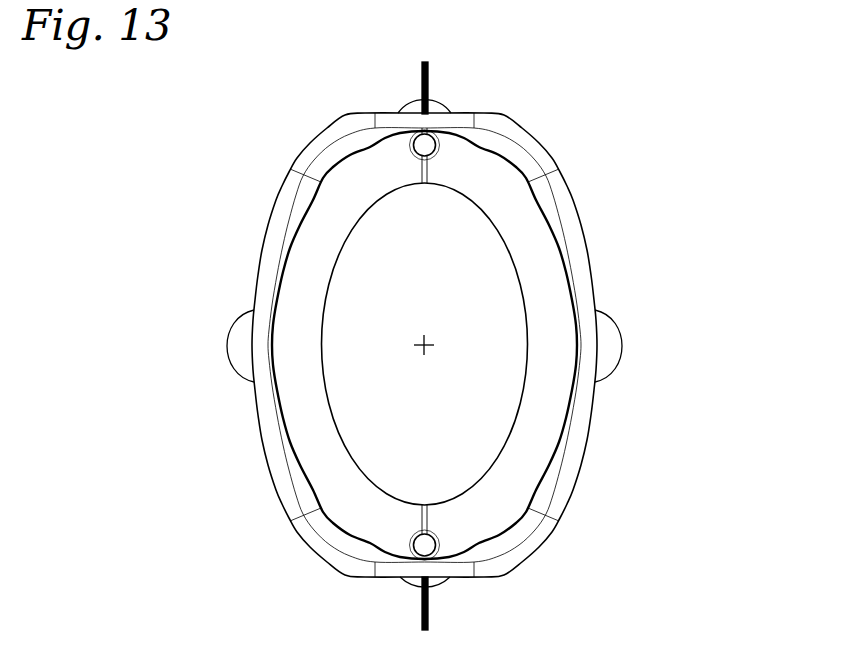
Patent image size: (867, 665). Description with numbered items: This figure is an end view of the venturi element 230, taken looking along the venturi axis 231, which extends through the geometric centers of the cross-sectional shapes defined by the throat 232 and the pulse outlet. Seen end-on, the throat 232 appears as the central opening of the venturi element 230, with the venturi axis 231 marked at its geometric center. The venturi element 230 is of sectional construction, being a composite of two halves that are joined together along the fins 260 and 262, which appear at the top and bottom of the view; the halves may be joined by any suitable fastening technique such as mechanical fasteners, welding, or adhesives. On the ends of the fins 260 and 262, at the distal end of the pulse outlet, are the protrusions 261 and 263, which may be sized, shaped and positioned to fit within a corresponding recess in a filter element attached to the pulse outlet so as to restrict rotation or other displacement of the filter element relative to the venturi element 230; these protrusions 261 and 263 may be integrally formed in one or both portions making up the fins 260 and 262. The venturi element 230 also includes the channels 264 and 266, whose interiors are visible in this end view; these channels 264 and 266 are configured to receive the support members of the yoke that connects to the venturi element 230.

The venturi element 230 is at (668, 103).
The venturi axis 231 is at (423, 345).
The throat 232 is at (468, 245).
The fin 260 is at (422, 72).
The protrusion 261 is at (422, 89).
The fin 262 is at (422, 618).
The protrusion 263 is at (422, 606).
The channel 264 is at (428, 142).
The channel 266 is at (428, 550).